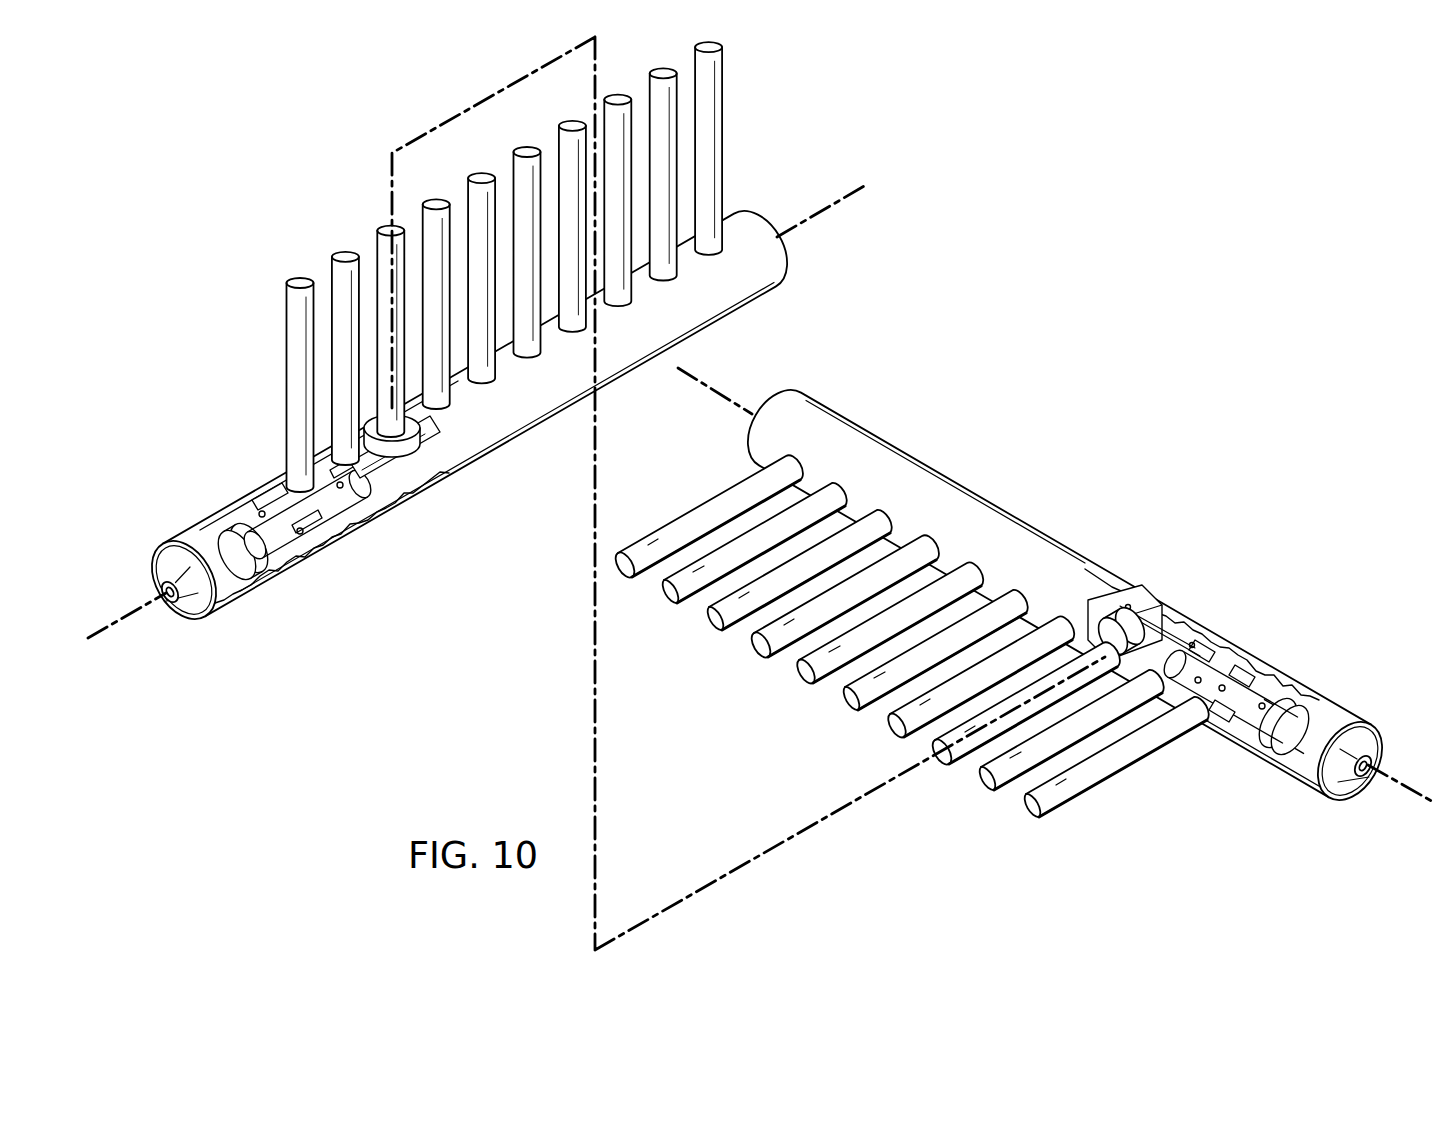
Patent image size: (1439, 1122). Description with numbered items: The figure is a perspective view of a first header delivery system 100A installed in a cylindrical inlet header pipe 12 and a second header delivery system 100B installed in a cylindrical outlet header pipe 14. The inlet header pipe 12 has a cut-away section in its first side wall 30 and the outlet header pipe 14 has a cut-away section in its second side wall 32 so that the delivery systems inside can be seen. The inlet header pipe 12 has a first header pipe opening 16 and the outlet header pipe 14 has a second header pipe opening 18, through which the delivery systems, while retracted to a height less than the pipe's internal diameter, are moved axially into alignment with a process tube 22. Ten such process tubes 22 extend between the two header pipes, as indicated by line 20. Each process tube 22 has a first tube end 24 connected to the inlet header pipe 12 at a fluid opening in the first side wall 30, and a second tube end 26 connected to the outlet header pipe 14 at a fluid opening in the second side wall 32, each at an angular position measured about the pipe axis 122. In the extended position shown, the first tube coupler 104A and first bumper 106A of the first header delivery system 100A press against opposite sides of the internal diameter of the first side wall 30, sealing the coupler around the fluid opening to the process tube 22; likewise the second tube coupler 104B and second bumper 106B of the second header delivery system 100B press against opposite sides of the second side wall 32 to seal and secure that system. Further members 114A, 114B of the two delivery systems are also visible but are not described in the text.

The inlet header pipe 12 is at (790, 274).
The outlet header pipe 14 is at (862, 415).
The first header pipe opening 16 is at (165, 565).
The second header pipe opening 18 is at (1345, 782).
The line 20 is at (470, 109).
The process tube 22 is at (372, 236).
The first tube end 24 is at (378, 405).
The second tube end 26 is at (958, 765).
The first side wall 30 is at (232, 517).
The second side wall 32 is at (1273, 755).
The first header delivery system 100A is at (340, 582).
The second header delivery system 100B is at (1212, 768).
The first tube coupler 104A is at (410, 440).
The second tube coupler 104B is at (1107, 630).
The first bumper 106A is at (392, 462).
The second bumper 106B is at (1160, 605).
The first rail 114A is at (383, 463).
The second rail 114B is at (1150, 643).
The axis 122 is at (848, 193).